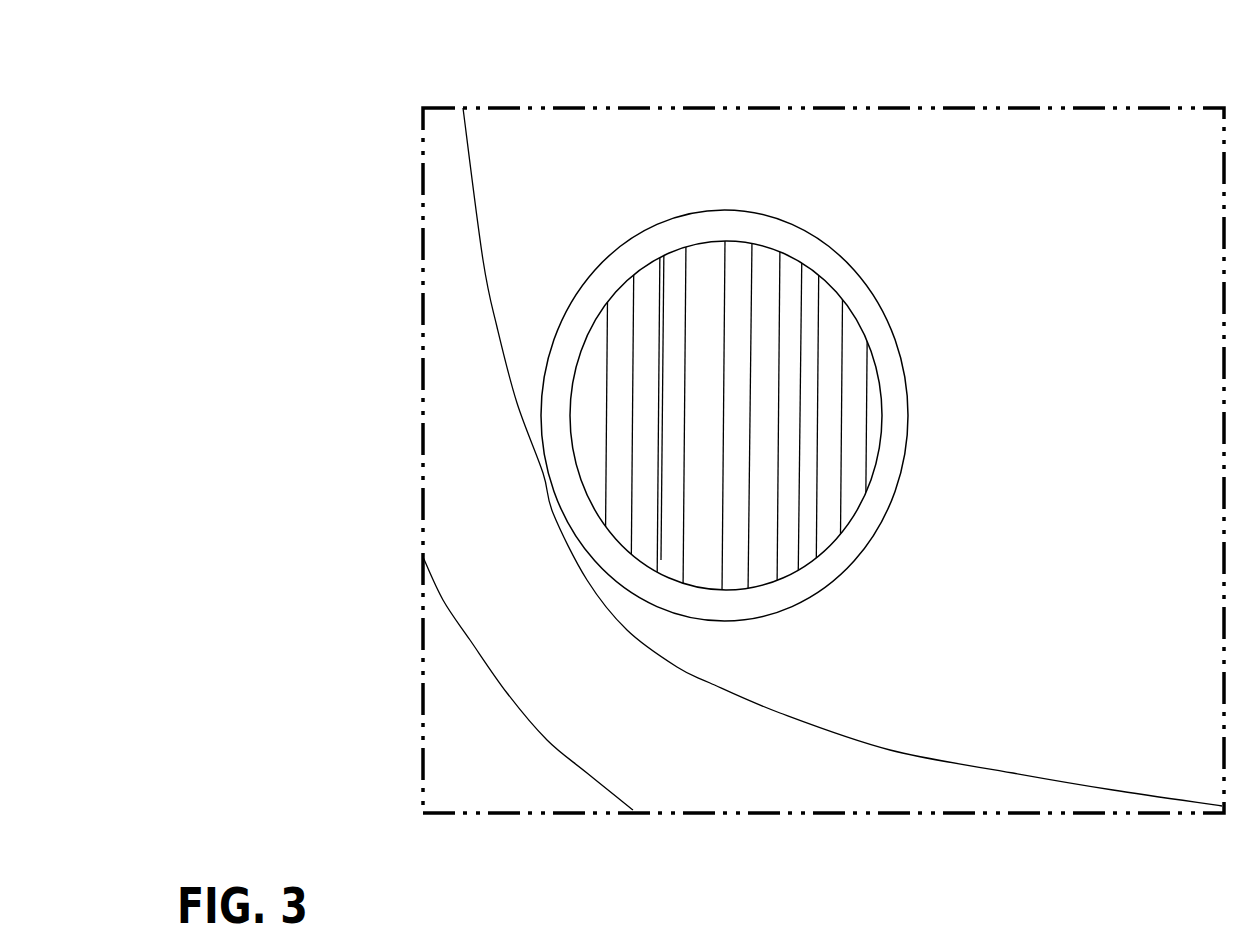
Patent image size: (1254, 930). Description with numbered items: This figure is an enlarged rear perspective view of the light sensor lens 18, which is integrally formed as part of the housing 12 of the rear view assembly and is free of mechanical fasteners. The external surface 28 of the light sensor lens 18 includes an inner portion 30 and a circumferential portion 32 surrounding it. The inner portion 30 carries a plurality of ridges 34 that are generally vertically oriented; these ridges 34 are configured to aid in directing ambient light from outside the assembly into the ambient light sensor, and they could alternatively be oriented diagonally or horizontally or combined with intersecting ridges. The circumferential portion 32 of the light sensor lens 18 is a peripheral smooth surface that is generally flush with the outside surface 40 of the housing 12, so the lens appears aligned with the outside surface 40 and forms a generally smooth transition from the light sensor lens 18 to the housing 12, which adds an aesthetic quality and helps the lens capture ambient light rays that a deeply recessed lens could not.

The housing 12 is at (868, 158).
The light sensor lens 18 is at (590, 398).
The external surface 28 is at (643, 480).
The inner portion 30 is at (687, 514).
The circumferential portion 32 is at (820, 585).
The ridges 34 is at (607, 347).
The outside surface 40 is at (1032, 383).